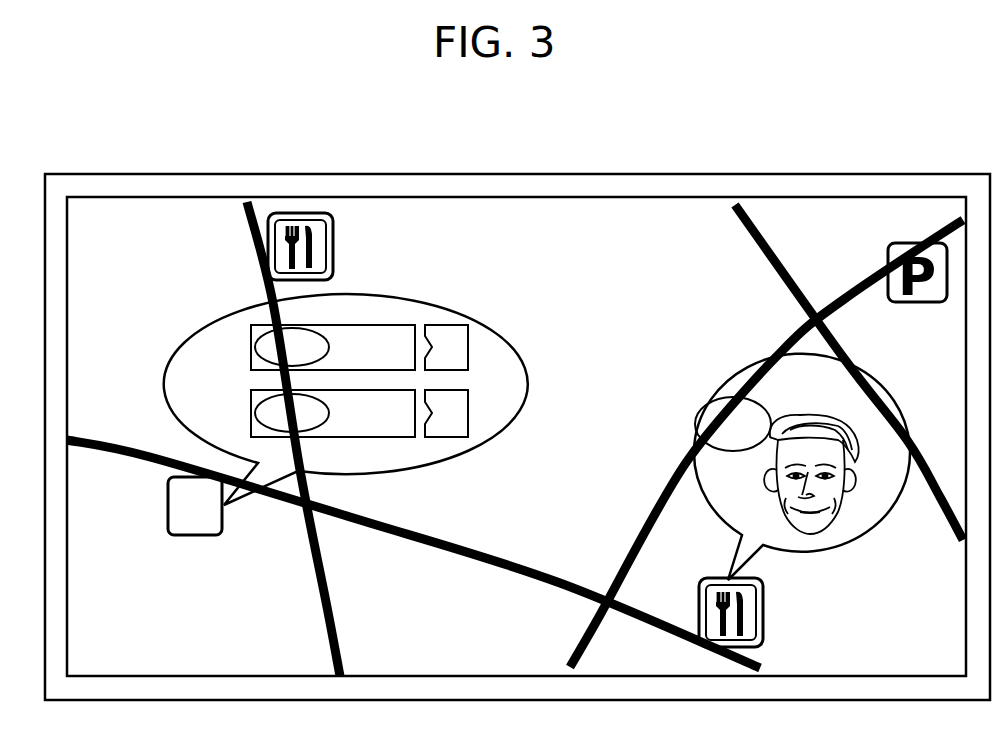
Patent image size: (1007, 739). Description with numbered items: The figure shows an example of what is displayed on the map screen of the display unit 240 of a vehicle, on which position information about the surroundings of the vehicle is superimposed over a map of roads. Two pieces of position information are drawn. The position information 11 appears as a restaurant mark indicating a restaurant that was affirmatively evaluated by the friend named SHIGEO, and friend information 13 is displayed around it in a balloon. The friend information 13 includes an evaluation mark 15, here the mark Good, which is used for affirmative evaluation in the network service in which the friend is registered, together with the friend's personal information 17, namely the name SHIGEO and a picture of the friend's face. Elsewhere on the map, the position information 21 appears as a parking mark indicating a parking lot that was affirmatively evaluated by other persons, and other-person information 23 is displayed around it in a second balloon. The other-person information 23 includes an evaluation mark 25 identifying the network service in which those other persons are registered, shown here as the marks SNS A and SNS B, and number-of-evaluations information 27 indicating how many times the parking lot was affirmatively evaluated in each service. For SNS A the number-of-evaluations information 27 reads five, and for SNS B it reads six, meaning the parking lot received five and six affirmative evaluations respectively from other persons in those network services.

The display unit 240 is at (652, 210).
The other-person information 23 is at (361, 394).
The evaluation mark 25 is at (248, 340).
The number-of-evaluations information 27 is at (470, 348).
The position information 21 is at (207, 537).
The friend information 13 is at (797, 473).
The evaluation mark 15 is at (729, 452).
The friend's personal information 17 is at (865, 413).
The position information 11 is at (764, 617).